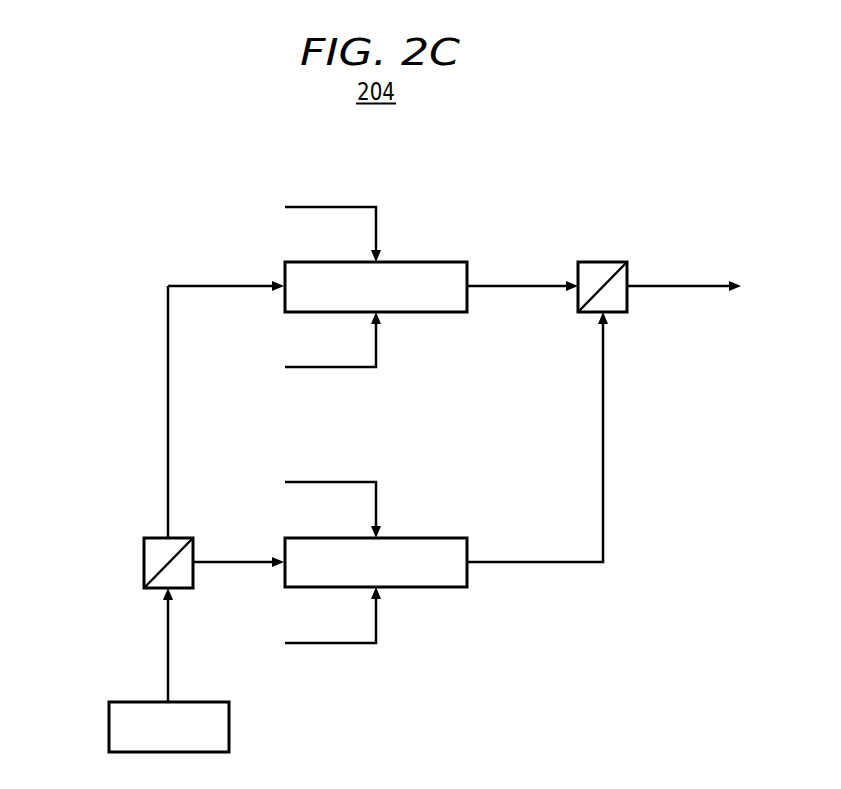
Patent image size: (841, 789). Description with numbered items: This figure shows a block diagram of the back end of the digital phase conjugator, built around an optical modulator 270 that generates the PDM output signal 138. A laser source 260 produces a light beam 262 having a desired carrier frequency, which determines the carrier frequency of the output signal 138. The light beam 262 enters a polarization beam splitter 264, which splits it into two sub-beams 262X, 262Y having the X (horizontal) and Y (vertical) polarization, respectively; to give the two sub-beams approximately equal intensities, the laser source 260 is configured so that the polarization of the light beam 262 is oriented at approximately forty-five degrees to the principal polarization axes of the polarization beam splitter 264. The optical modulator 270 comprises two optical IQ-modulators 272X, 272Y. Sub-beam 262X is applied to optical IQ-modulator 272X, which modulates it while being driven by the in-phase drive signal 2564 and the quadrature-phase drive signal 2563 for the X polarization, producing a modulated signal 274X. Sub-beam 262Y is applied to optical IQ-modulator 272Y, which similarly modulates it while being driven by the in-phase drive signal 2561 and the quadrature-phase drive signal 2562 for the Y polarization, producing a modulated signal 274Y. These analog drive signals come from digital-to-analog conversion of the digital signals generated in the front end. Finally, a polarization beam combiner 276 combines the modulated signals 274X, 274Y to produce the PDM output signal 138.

The optical modulator 270 is at (82, 310).
The laser source 260 is at (108, 726).
The light beam 262 is at (165, 648).
The polarization beam splitter 264 is at (143, 558).
The sub-beam 262X is at (225, 285).
The sub-beam 262Y is at (235, 561).
The optical IQ-modulator 272X is at (404, 261).
The optical IQ-modulator 272Y is at (404, 537).
The analog signal 2564 is at (310, 206).
The analog signal 2563 is at (350, 368).
The analog signal 2561 is at (310, 481).
The analog signal 2562 is at (350, 644).
The modulated signal 274X is at (533, 285).
The modulated signal 274Y is at (533, 561).
The polarization beam combiner 276 is at (605, 261).
The output signal 138 is at (689, 284).